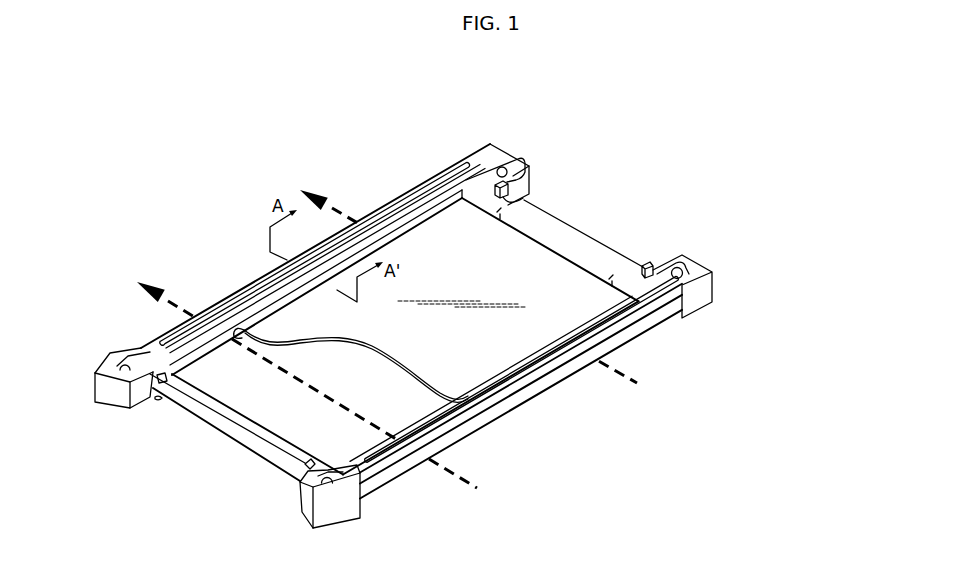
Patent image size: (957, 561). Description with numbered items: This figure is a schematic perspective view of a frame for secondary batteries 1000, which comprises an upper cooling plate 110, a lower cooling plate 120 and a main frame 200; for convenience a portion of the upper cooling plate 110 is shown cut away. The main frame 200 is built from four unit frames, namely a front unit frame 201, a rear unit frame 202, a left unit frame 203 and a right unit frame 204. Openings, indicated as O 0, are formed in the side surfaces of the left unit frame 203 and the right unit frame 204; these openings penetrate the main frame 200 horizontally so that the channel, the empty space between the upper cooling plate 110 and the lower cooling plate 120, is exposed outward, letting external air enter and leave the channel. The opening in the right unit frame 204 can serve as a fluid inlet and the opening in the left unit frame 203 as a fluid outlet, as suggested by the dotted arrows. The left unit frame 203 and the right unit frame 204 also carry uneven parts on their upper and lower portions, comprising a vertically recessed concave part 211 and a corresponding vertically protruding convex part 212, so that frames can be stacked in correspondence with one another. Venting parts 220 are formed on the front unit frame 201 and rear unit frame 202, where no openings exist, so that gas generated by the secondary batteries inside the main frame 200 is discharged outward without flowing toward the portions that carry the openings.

The frame for secondary batteries 1000 is at (441, 117).
The main frame 200 is at (501, 430).
The front unit frame 201 is at (226, 414).
The rear unit frame 202 is at (576, 244).
The left unit frame 203 is at (260, 281).
The right unit frame 204 is at (567, 352).
The concave part 211 is at (443, 178).
The convex part 212 is at (628, 354).
The venting part 220 is at (525, 196).
The upper cooling plate 110 is at (410, 252).
The lower cooling plate 120 is at (404, 444).
The opening 0 is at (248, 330).